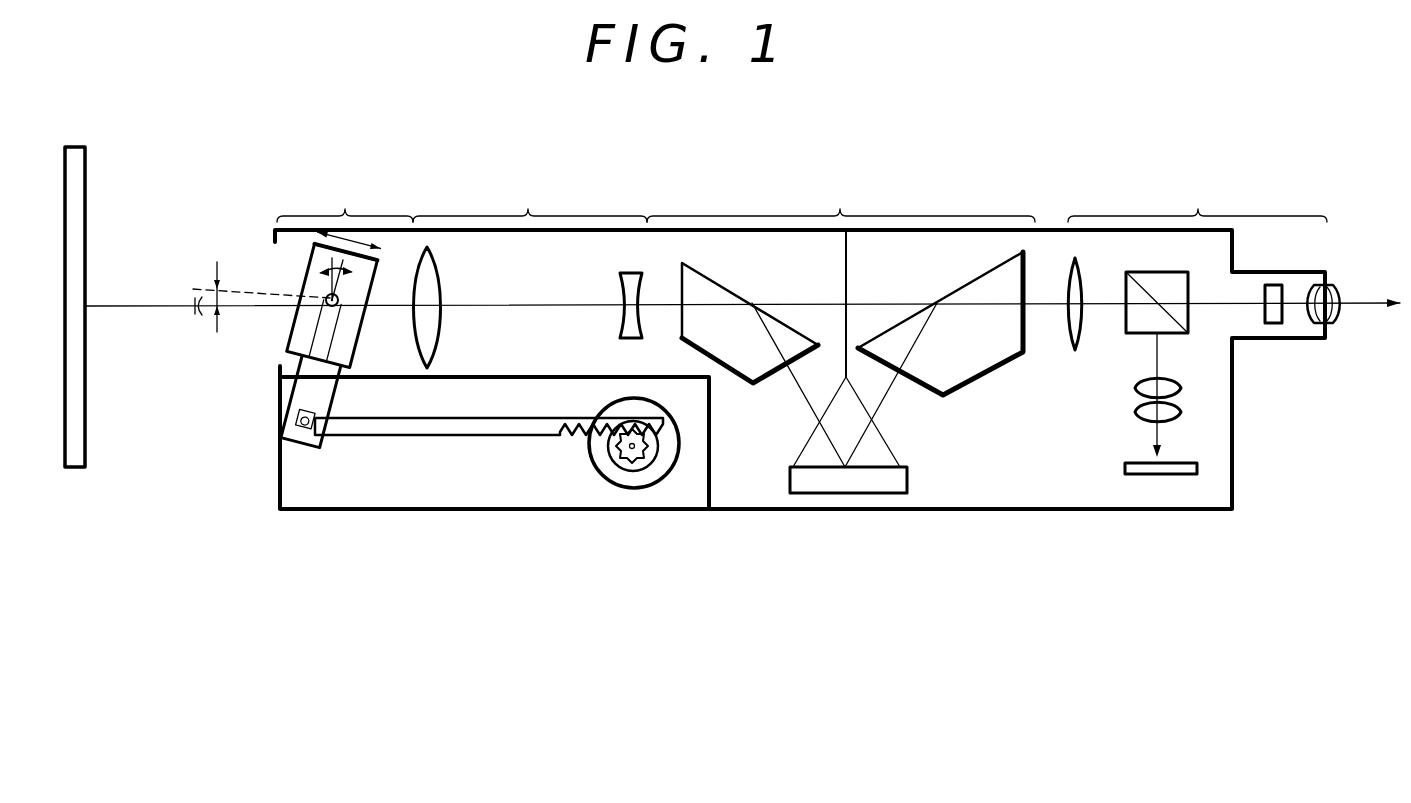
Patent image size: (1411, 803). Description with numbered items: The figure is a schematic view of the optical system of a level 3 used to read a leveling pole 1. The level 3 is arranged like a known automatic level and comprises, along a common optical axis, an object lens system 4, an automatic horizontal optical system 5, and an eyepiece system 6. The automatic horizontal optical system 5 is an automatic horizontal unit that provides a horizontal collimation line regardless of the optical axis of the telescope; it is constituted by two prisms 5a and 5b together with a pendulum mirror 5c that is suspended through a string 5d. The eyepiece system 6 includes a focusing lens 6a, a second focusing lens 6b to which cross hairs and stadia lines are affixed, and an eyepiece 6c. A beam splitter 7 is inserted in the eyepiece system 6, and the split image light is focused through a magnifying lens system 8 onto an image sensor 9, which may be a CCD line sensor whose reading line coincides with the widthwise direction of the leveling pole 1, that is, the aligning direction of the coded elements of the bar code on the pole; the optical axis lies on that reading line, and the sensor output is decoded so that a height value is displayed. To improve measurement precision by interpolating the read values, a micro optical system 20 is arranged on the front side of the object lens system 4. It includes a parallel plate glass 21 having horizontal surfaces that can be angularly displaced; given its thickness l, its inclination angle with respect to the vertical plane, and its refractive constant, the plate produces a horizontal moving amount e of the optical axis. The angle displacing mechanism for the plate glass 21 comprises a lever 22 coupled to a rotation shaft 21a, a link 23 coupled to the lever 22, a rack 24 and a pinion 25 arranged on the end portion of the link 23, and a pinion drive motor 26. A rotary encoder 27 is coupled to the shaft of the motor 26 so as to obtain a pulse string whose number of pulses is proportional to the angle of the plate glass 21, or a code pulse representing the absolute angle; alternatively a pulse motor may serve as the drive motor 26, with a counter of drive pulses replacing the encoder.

The leveling pole 1 is at (88, 208).
The horizontal moving amount of the optical axis e is at (218, 300).
The level 3 is at (512, 378).
The object lens system 4 is at (530, 269).
The automatic horizontal optical system 5 is at (841, 331).
The prism 5a is at (752, 303).
The prism 5b is at (927, 303).
The pendulum mirror 5c is at (878, 467).
The string 5d is at (849, 300).
The eyepiece system 6 is at (1223, 288).
The focusing lens 6a is at (1073, 352).
The focusing lens 6b is at (1272, 285).
The eyepiece 6c is at (1340, 295).
The beam splitter 7 is at (1150, 272).
The magnifying lens system 8 is at (1198, 398).
The image sensor 9 is at (1200, 471).
The micro optical system 20 is at (310, 308).
The plate glass 21 is at (293, 325).
The rotation shaft 21a is at (335, 310).
The lever 22 is at (288, 388).
The link 23 is at (432, 436).
The rack 24 is at (630, 420).
The pinion 25 is at (640, 458).
The pinion drive motor 26 is at (672, 478).
The rotary encoder 27 is at (606, 450).
The thickness of the plate glass l is at (359, 244).